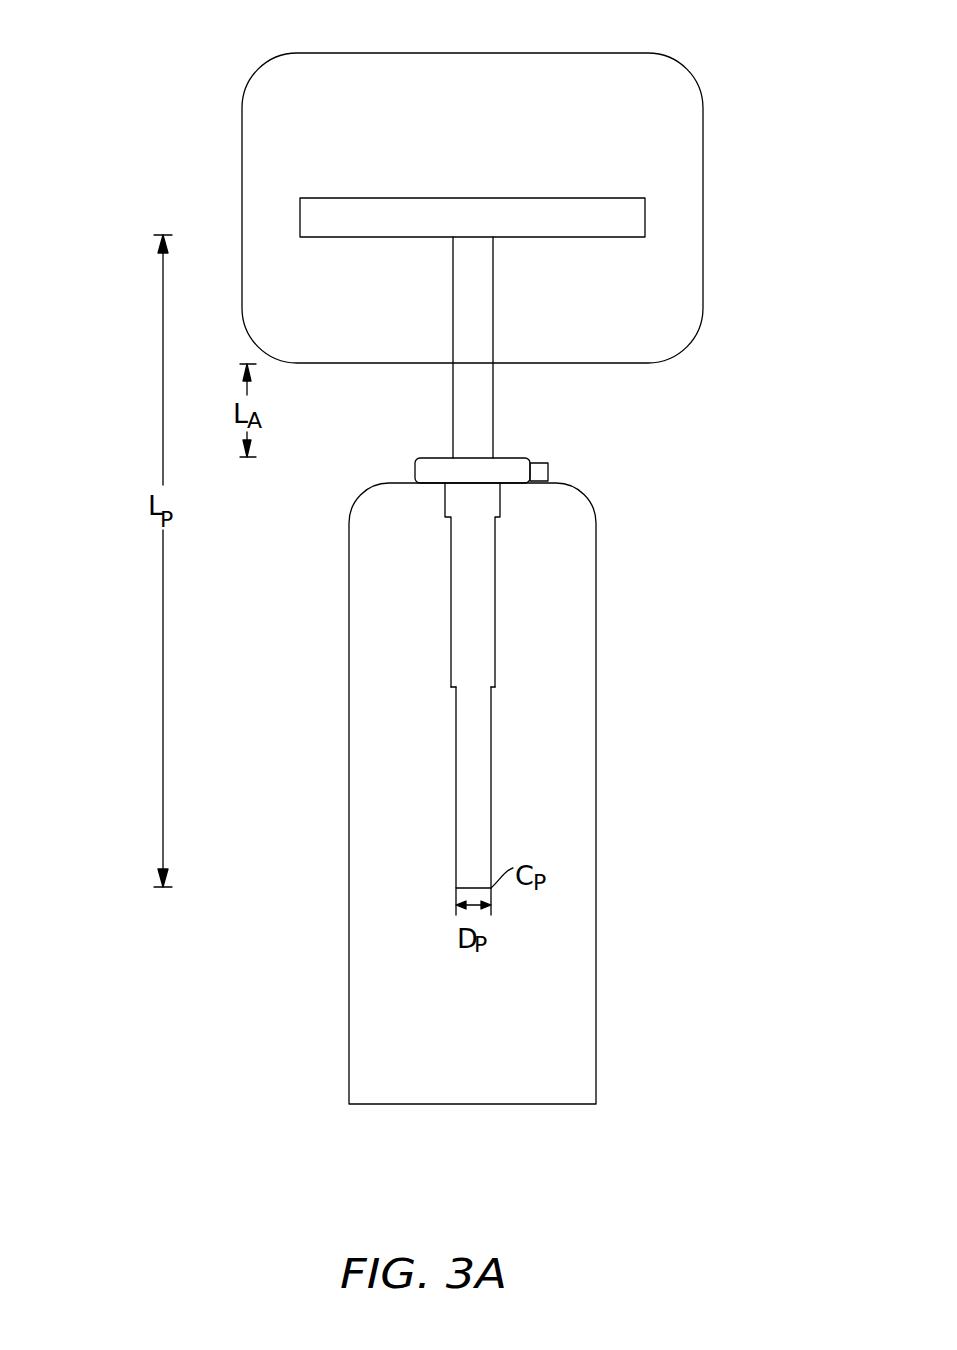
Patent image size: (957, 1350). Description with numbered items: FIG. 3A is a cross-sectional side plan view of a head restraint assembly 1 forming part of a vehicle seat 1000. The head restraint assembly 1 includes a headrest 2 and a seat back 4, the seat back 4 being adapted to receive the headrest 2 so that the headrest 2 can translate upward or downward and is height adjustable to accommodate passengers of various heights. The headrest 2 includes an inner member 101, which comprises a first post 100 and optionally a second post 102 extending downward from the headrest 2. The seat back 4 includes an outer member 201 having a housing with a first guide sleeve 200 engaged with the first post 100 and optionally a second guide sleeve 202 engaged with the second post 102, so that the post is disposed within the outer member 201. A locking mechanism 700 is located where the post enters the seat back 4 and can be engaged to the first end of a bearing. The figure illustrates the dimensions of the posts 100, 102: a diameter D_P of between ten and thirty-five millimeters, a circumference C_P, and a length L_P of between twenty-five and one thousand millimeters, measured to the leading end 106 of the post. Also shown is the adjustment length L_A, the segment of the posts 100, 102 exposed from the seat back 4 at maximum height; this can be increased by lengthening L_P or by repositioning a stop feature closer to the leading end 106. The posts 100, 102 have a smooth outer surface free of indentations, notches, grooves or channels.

The vehicle seat 1000 is at (144, 36).
The head restraint assembly 1 is at (668, 430).
The headrest 2 is at (695, 82).
The seat back 4 is at (349, 1021).
The first post 100 is at (557, 347).
The second post 102 is at (493, 430).
The inner member 101 is at (452, 438).
The leading end 106 is at (491, 892).
The first guide sleeve 200 is at (349, 585).
The second guide sleeve 202 is at (451, 637).
The outer member 201 is at (495, 687).
The locking mechanism 700 is at (415, 475).